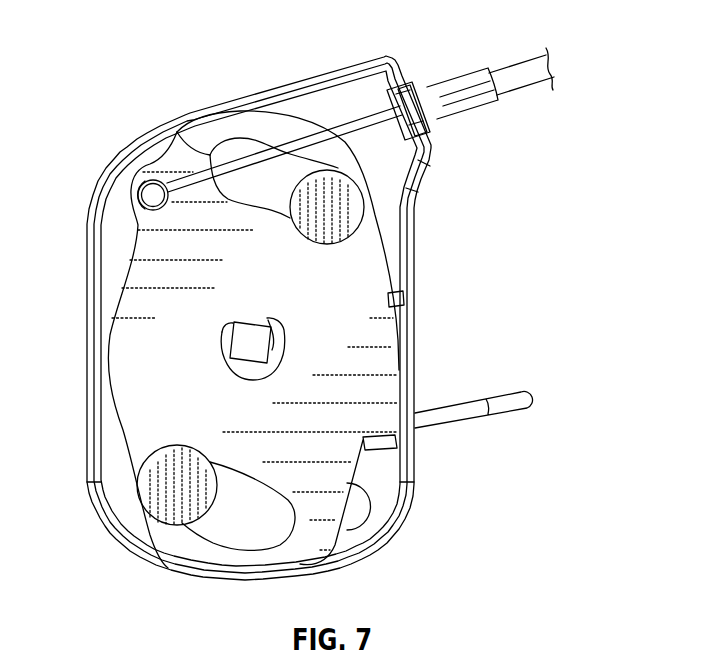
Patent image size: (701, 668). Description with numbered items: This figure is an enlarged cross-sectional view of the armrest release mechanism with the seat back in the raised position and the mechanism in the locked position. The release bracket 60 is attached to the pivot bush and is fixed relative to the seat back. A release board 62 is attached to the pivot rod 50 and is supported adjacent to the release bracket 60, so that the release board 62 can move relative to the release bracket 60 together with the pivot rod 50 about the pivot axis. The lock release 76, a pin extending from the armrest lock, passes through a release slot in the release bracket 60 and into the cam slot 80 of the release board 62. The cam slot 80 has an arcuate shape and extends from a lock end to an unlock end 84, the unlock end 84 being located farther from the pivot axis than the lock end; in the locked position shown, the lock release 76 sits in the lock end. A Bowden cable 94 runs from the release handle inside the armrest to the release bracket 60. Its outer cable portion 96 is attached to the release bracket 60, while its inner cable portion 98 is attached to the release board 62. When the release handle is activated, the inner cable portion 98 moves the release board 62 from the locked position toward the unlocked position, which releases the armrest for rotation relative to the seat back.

The pivot rod 50 is at (273, 350).
The release bracket 60 is at (268, 93).
The release board 62 is at (121, 335).
The lock release 76 is at (367, 208).
The cam slot 80 is at (258, 208).
The unlock end 84 is at (177, 132).
The Bowden cable 94 is at (463, 83).
The outer cable portion 96 is at (410, 83).
The inner cable portion 98 is at (370, 119).